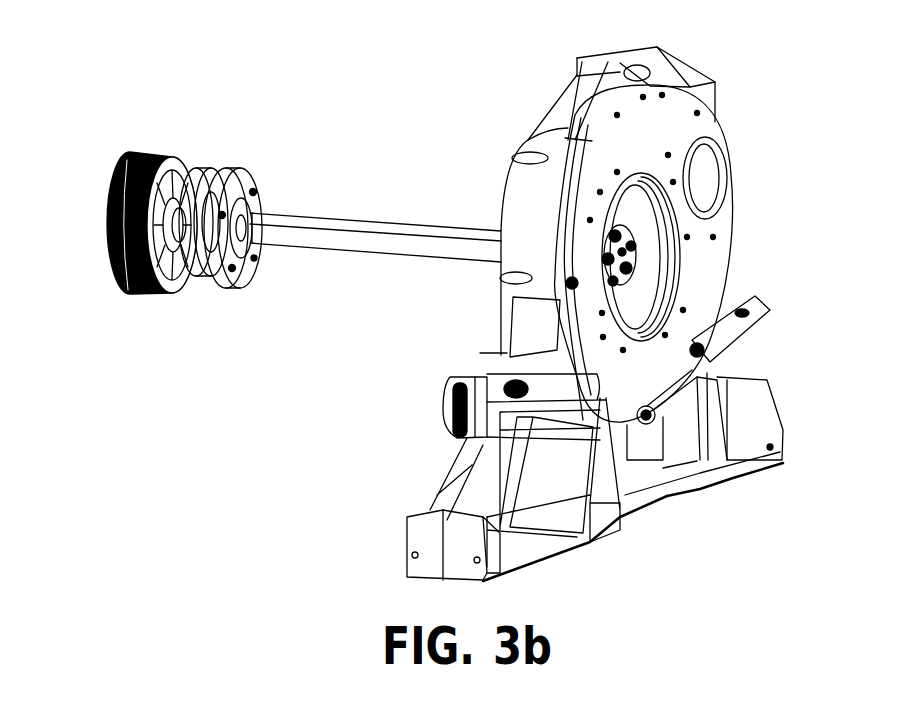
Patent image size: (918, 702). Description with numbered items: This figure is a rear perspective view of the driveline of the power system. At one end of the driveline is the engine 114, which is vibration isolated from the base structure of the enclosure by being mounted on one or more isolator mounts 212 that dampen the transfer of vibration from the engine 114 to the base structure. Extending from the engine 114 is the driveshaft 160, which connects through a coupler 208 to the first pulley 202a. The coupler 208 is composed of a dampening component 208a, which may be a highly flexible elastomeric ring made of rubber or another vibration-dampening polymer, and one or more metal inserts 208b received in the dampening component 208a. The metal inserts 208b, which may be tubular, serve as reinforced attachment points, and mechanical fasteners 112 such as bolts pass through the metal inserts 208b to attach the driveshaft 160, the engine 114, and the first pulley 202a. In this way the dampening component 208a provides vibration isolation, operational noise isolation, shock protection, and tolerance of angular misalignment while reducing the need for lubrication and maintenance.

The first pulley 202a is at (103, 232).
The coupler 208 is at (276, 193).
The dampening component 208a is at (218, 167).
The metal inserts 208b is at (247, 273).
The mechanical fasteners 112 is at (228, 211).
The driveshaft 160 is at (358, 248).
The engine 114 is at (725, 121).
The isolator mounts 212 is at (500, 352).